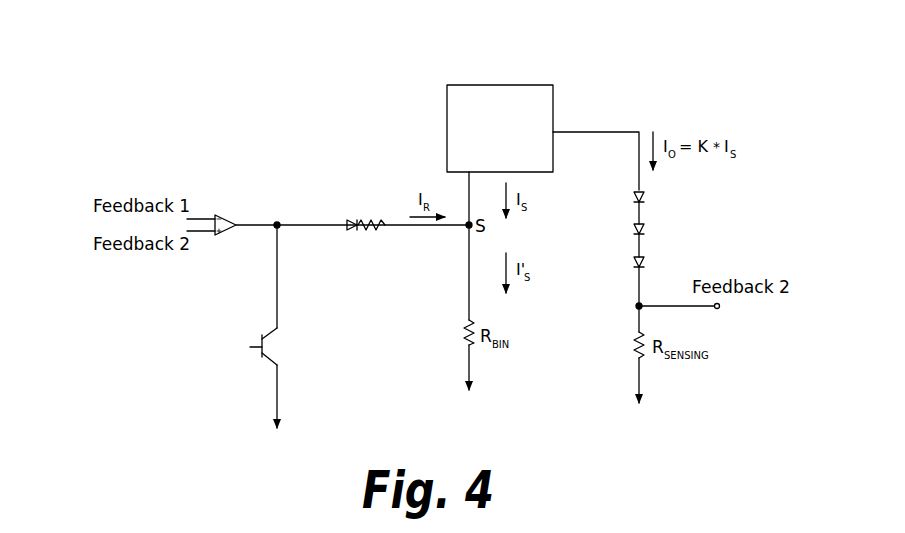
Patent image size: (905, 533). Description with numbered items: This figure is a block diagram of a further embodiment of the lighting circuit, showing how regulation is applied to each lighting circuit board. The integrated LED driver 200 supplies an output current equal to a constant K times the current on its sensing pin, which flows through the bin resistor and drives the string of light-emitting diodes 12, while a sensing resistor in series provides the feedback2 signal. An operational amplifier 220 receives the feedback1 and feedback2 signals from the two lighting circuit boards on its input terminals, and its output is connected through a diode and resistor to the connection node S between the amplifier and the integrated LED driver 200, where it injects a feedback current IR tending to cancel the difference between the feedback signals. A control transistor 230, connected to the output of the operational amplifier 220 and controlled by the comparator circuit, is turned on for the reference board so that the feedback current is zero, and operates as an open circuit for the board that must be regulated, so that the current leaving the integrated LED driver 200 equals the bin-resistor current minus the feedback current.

The integrated LED driver 200 is at (555, 103).
The operational amplifier 220 is at (228, 215).
The LED string 12 is at (666, 230).
The control transistor 230 is at (247, 366).